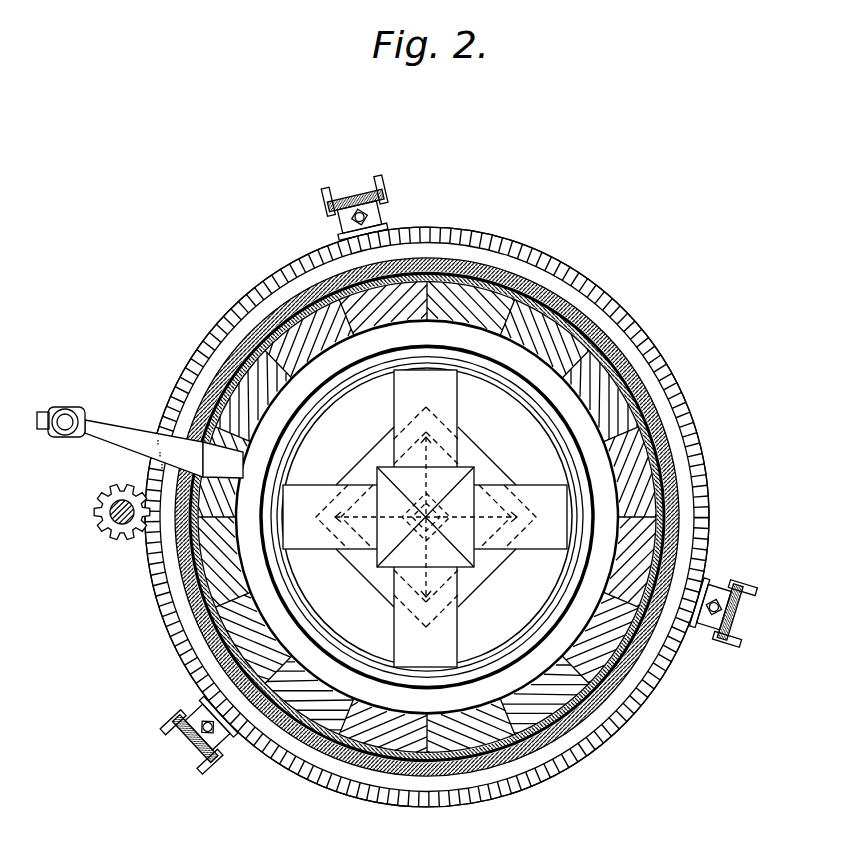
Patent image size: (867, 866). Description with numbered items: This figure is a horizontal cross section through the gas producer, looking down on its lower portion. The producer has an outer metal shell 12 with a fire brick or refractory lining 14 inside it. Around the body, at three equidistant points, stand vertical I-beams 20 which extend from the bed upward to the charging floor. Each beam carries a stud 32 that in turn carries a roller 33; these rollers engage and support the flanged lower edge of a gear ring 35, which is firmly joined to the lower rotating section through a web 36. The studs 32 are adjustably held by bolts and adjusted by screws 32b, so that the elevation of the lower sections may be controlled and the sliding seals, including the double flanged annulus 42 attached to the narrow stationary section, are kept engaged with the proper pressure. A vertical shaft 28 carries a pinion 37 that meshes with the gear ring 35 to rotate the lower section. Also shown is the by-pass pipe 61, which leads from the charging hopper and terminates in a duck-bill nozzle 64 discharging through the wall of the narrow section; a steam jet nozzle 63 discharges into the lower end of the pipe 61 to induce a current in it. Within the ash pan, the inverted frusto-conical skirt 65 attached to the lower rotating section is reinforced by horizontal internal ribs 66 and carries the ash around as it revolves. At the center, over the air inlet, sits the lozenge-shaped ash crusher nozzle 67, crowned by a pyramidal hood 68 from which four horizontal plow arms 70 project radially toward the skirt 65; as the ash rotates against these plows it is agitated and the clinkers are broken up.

The metal shell 12 is at (540, 773).
The refractory lining 14 is at (580, 333).
The vertical I-beams 20 is at (357, 188).
The vertical shaft 28 is at (115, 518).
The studs 32 is at (328, 212).
The adjusting screws 32b is at (383, 196).
The rollers 33 is at (385, 226).
The gear ring 35 is at (185, 585).
The web 36 is at (236, 300).
The pinion 37 is at (118, 543).
The double flanged annulus 42 is at (603, 712).
The by-pass pipe 61 is at (77, 407).
The steam jet nozzle 63 is at (45, 408).
The duck-bill nozzle 64 is at (122, 430).
The frusto-conical skirt 65 is at (462, 712).
The internal ribs 66 is at (318, 650).
The ash crusher nozzle 67 is at (473, 557).
The pyramidal hood 68 is at (470, 483).
The plow arms 70 is at (426, 518).